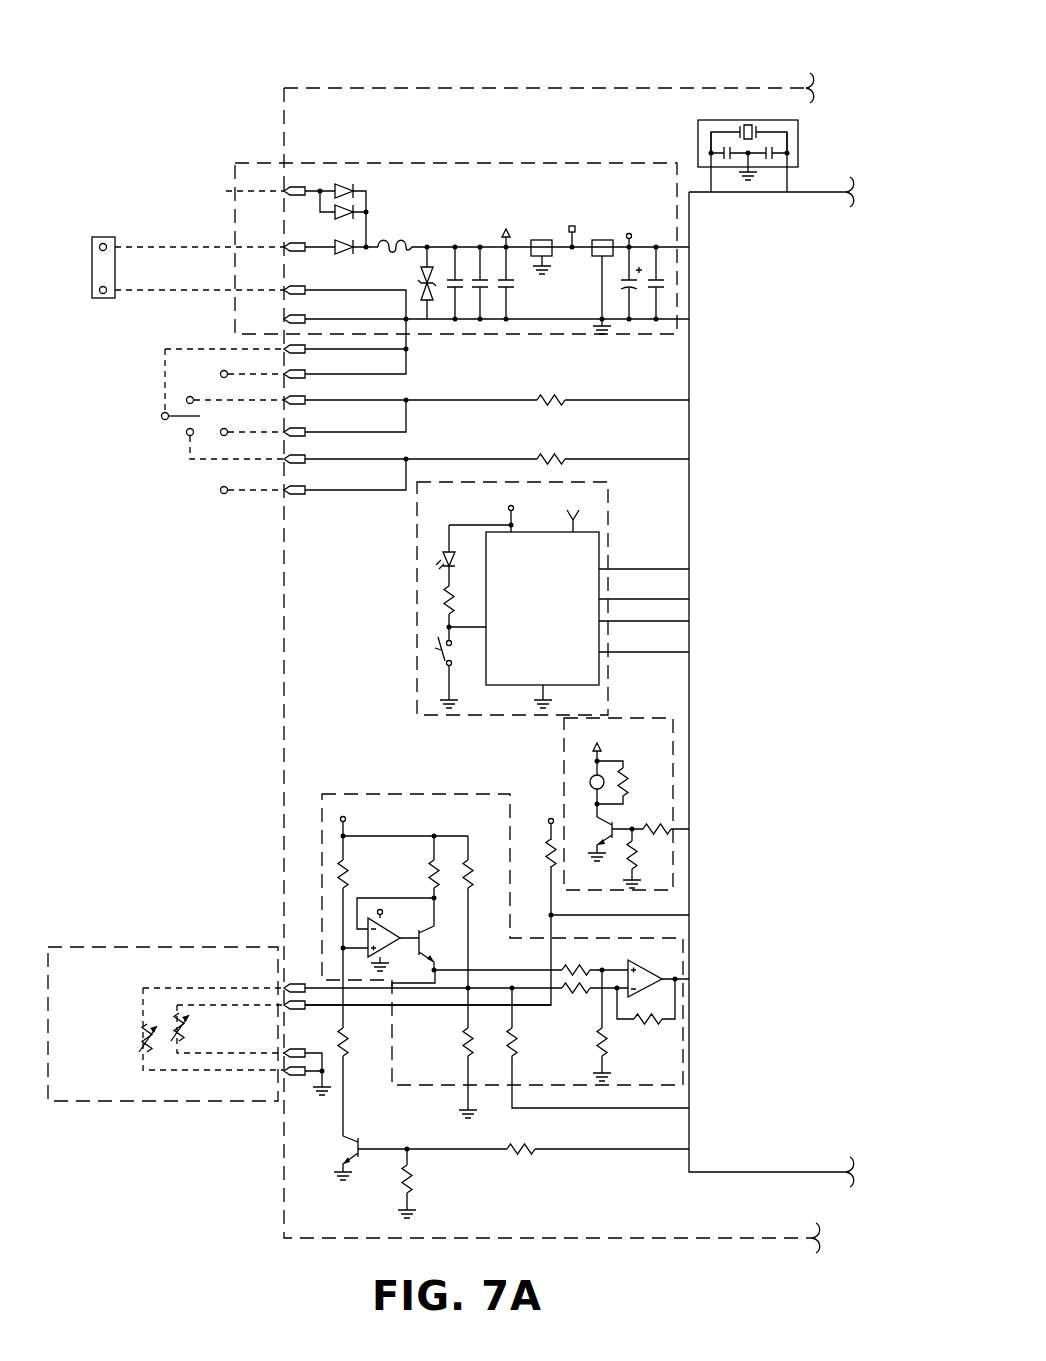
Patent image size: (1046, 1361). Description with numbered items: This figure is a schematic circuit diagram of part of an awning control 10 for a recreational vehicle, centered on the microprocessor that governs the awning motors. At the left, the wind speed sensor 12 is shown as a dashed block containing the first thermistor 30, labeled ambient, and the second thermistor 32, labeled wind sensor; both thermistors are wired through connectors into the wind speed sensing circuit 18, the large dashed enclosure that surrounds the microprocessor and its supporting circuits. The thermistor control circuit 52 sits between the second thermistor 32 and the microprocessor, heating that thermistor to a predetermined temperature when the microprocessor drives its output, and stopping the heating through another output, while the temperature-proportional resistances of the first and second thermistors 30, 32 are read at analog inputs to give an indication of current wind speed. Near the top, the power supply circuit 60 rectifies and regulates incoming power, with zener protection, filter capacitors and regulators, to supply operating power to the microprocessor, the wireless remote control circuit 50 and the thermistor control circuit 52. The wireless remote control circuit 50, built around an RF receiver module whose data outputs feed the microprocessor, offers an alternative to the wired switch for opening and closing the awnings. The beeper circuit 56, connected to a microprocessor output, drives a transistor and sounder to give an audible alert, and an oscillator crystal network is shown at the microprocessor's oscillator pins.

The awning control 10 is at (226, 72).
The wind speed sensing circuit 18 is at (464, 88).
The power supply circuit 60 is at (484, 163).
The wireless remote control circuit 50 is at (417, 594).
The thermistor control circuit 52 is at (398, 794).
The beeper circuit 56 is at (565, 748).
The wind speed sensor 12 is at (145, 947).
The second thermistor 32 is at (145, 1030).
The first thermistor 30 is at (175, 1045).